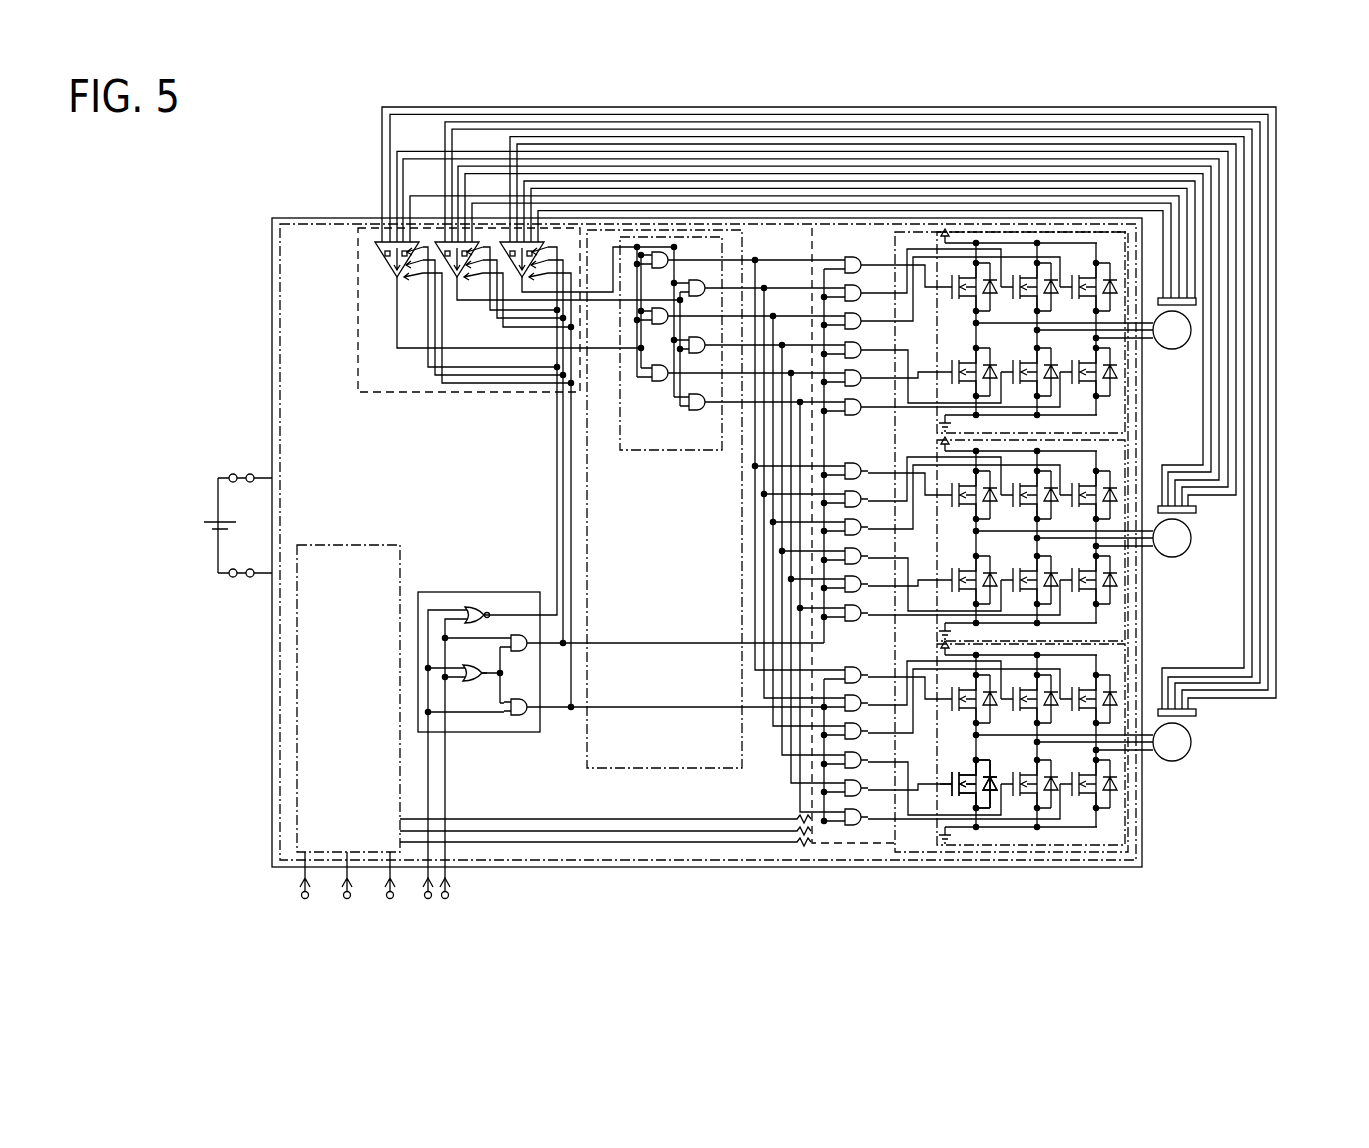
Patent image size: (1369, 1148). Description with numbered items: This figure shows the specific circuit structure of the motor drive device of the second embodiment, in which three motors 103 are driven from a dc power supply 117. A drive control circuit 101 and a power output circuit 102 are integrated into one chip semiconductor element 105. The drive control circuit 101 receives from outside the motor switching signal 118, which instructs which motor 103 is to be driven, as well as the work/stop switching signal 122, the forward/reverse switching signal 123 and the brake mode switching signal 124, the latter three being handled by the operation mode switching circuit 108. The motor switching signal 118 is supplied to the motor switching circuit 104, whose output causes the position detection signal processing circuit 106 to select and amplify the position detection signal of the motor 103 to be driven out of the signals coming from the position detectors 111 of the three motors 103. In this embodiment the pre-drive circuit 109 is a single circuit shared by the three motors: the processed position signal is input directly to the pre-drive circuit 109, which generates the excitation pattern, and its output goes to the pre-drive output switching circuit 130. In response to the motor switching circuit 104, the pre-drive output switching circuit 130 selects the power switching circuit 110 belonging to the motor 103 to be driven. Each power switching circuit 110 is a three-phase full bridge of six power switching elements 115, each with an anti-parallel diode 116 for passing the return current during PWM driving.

The drive control circuit 101 is at (282, 228).
The power output circuit 102 is at (1133, 228).
The motor 103 is at (1172, 351).
The motor switching circuit 104 is at (540, 732).
The one chip semiconductor element 105 is at (1141, 222).
The position detection signal processing circuit 106 is at (362, 237).
The operation mode switching circuit 108 is at (270, 853).
The pre-drive circuit 109 is at (733, 230).
The power switching circuit 110 is at (1052, 579).
The position detector 111 is at (1194, 301).
The power switching element 115 is at (965, 795).
The anti-parallel diode 116 is at (991, 792).
The dc power supply 117 is at (212, 512).
The motor switching signal 118 is at (436, 903).
The work/stop switching signal 122 is at (304, 890).
The forward/reverse switching signal 123 is at (347, 890).
The brake mode switching signal 124 is at (391, 890).
The pre-drive output switching circuit 130 is at (806, 846).